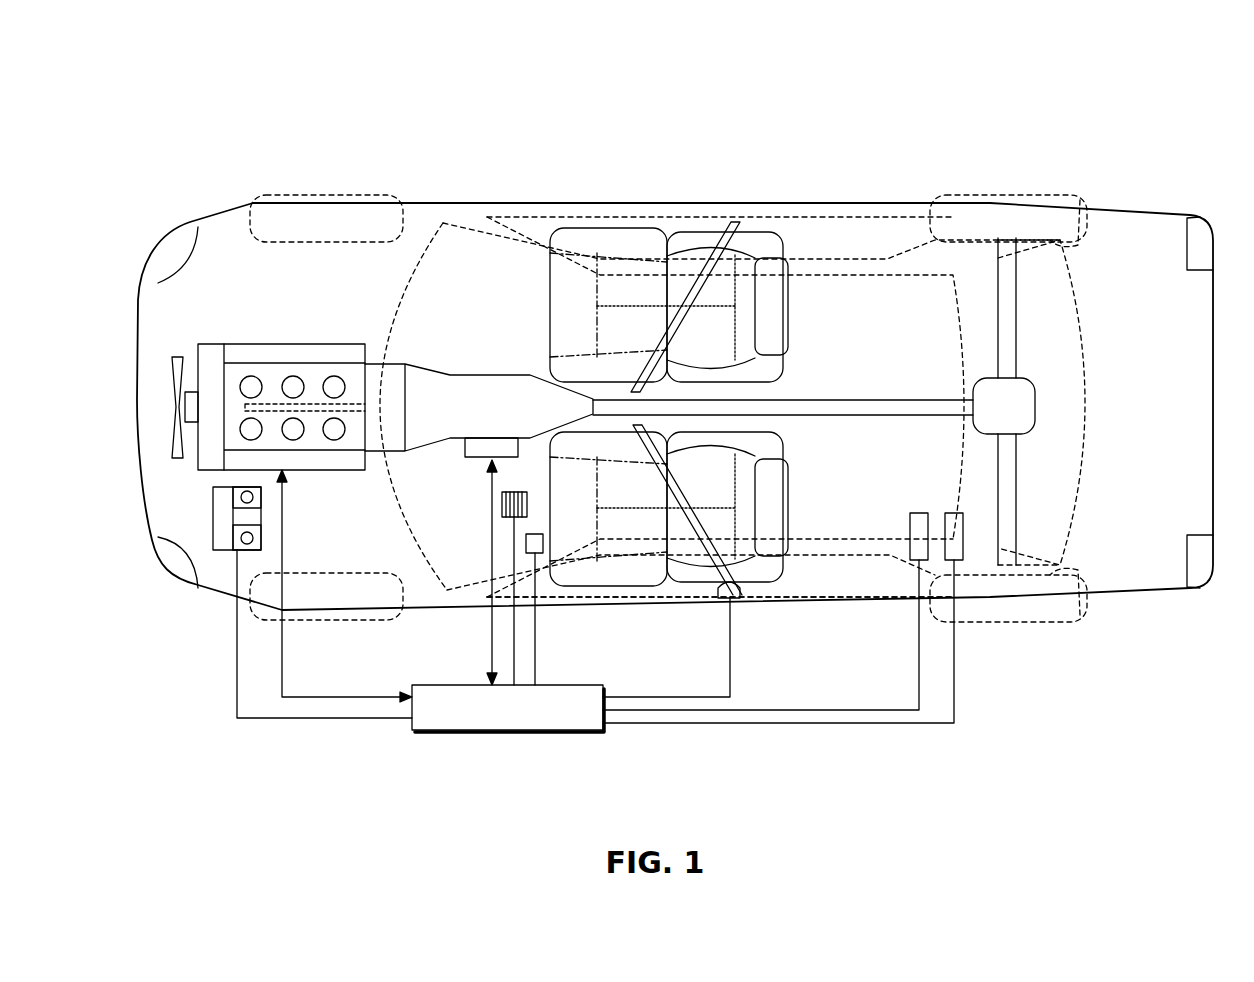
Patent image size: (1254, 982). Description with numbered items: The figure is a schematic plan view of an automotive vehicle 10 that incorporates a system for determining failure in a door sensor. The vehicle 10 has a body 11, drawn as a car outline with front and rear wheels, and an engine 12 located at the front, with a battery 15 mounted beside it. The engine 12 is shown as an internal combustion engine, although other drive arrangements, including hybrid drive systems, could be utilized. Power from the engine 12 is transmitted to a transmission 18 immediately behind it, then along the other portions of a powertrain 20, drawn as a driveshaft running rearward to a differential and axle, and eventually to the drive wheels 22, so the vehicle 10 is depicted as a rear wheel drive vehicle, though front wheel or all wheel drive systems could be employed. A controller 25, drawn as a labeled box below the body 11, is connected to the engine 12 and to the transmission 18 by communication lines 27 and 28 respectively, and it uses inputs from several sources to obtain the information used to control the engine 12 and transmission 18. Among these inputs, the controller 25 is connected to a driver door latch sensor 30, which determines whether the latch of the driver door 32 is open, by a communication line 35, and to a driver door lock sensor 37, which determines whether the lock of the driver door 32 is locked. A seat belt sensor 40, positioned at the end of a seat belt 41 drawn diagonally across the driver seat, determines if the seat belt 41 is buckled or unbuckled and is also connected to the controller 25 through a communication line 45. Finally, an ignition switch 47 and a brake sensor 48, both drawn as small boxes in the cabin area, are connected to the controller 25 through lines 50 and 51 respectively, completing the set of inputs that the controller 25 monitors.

The automotive vehicle 10 is at (632, 116).
The body 11 is at (832, 203).
The engine 12 is at (282, 334).
The battery 15 is at (213, 520).
The transmission 18 is at (449, 372).
The powertrain 20 is at (797, 398).
The drive wheels 22 is at (1005, 195).
The controller 25 is at (490, 731).
The communication line 27 is at (282, 665).
The communication line 28 is at (490, 505).
The driver door latch sensor 30 is at (919, 513).
The driver door 32 is at (870, 598).
The communication line 35 is at (790, 710).
The driver door lock sensor 37 is at (954, 513).
The seat belt sensor 40 is at (742, 592).
The seat belt 41 is at (682, 500).
The communication line 45 is at (665, 697).
The ignition switch 47 is at (536, 534).
The brake sensor 48 is at (512, 492).
The line 50 is at (536, 670).
The line 51 is at (515, 645).